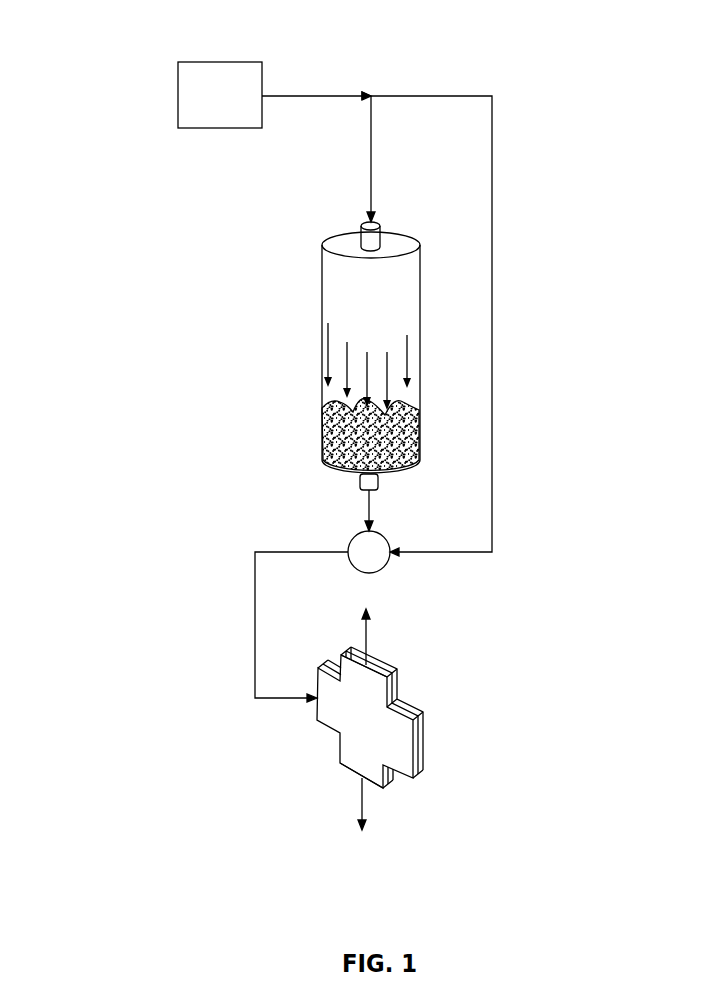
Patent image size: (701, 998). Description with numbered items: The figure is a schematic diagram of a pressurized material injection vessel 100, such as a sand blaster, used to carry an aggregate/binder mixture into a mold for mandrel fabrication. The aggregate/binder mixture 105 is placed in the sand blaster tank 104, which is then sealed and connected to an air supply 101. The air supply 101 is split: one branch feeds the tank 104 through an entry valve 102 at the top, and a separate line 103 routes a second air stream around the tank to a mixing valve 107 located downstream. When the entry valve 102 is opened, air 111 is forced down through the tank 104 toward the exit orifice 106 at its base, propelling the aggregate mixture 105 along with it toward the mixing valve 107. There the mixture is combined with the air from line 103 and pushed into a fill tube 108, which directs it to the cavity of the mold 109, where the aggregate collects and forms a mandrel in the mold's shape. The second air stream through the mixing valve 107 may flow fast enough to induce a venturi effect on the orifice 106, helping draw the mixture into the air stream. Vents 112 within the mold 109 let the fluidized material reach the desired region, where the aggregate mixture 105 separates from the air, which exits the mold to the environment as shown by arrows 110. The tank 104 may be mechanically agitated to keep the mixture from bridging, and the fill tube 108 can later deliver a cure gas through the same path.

The pressurized material injection vessel 100 is at (152, 370).
The air supply 101 is at (222, 70).
The entry valve 102 is at (360, 228).
The separate line 103 is at (492, 346).
The sand blaster tank 104 is at (323, 242).
The aggregate/binder mixture 105 is at (322, 432).
The exit orifice 106 is at (360, 480).
The mixing valve 107 is at (390, 565).
The fill tube 108 is at (255, 625).
The mold 109 is at (425, 752).
The arrows 110 is at (368, 642).
The air 111 is at (322, 357).
The vents 112 is at (365, 660).